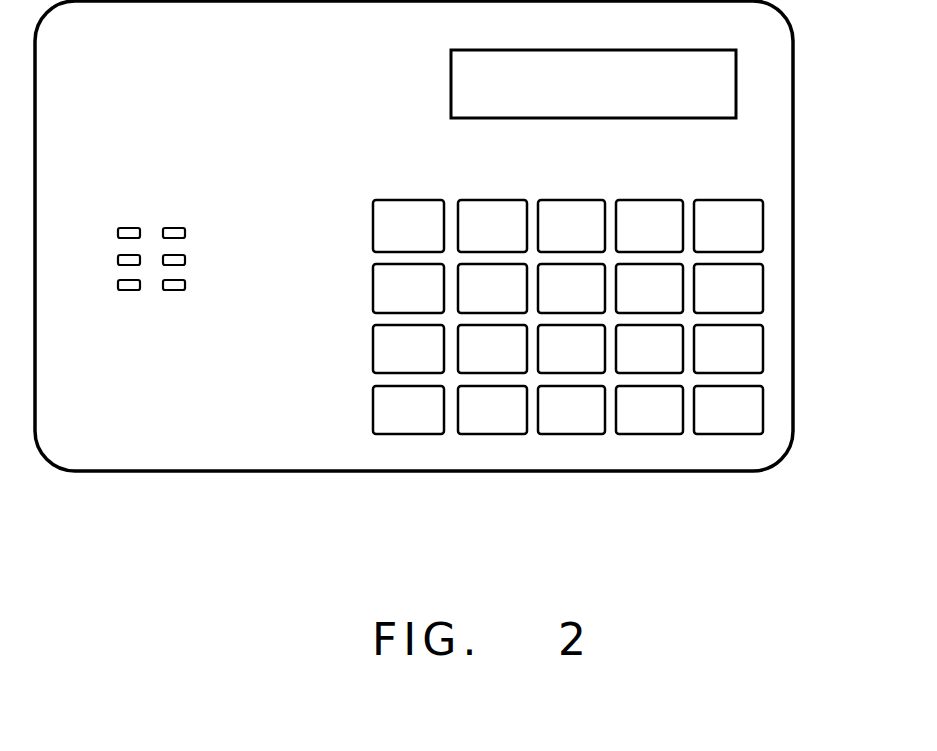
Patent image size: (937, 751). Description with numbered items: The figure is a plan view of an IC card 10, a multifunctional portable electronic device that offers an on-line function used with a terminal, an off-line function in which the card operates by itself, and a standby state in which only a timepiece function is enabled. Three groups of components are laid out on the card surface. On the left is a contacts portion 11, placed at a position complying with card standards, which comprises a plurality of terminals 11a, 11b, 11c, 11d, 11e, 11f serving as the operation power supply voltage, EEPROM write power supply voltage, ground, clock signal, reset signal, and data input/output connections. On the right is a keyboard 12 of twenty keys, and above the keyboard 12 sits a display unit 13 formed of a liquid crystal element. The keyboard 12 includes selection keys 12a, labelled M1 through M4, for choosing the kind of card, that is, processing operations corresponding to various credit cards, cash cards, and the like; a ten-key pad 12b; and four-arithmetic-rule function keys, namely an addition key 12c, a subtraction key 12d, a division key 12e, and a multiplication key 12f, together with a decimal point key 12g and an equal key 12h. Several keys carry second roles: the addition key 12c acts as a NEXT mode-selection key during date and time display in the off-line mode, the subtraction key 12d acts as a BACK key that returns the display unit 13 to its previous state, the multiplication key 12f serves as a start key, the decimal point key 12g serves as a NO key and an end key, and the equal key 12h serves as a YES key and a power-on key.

The IC card 10 is at (772, 152).
The contacts portion 11 is at (151, 355).
The terminal 11a is at (129, 227).
The terminal 11b is at (118, 260).
The terminal 11c is at (129, 291).
The terminal 11d is at (176, 227).
The terminal 11e is at (185, 260).
The terminal 11f is at (173, 291).
The keyboard 12 is at (574, 360).
The selection keys 12a is at (373, 335).
The ten-key pad 12b is at (578, 433).
The addition key 12c is at (757, 241).
The subtraction key 12d is at (757, 300).
The division key 12e is at (757, 360).
The multiplication key 12f is at (757, 418).
The decimal point key 12g is at (481, 435).
The equal key 12h is at (675, 432).
The display unit 13 is at (657, 50).